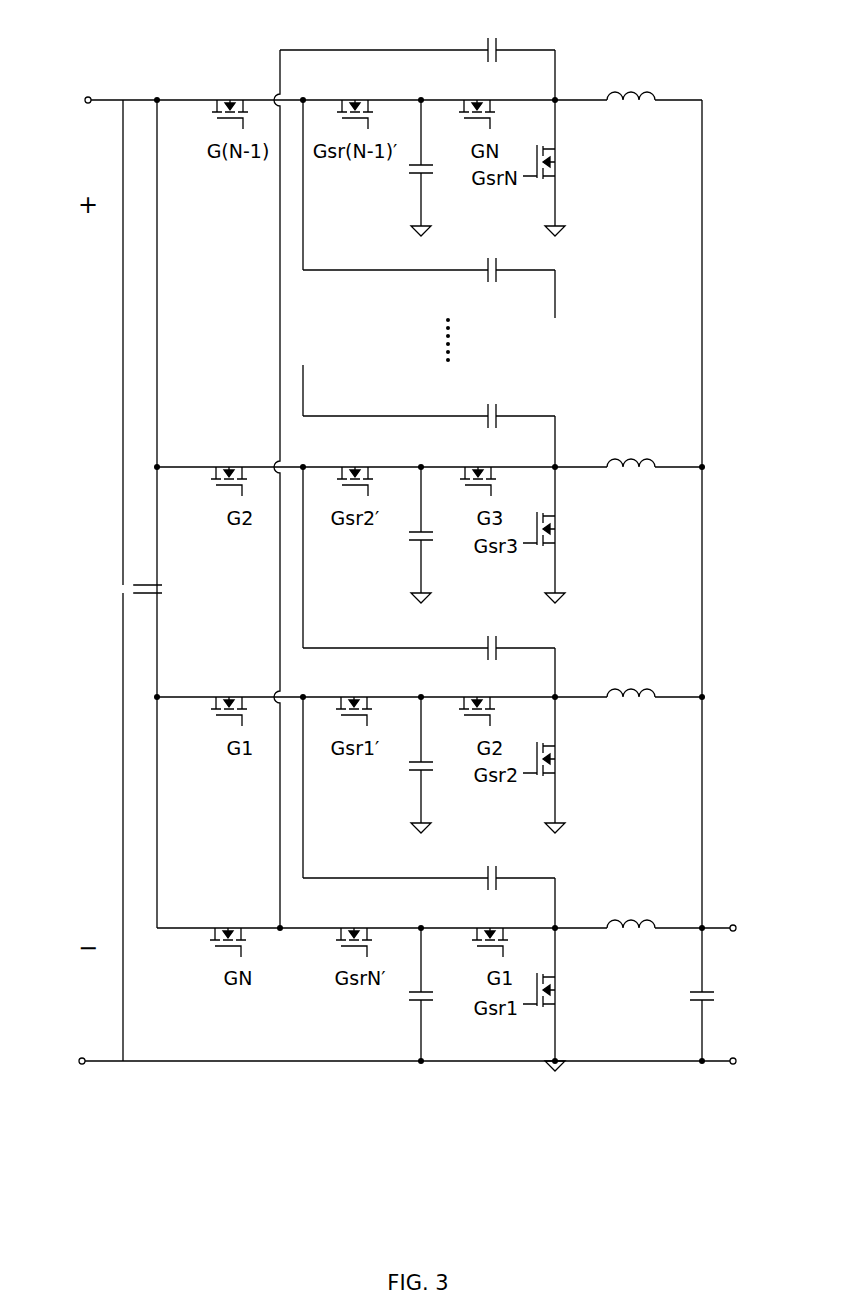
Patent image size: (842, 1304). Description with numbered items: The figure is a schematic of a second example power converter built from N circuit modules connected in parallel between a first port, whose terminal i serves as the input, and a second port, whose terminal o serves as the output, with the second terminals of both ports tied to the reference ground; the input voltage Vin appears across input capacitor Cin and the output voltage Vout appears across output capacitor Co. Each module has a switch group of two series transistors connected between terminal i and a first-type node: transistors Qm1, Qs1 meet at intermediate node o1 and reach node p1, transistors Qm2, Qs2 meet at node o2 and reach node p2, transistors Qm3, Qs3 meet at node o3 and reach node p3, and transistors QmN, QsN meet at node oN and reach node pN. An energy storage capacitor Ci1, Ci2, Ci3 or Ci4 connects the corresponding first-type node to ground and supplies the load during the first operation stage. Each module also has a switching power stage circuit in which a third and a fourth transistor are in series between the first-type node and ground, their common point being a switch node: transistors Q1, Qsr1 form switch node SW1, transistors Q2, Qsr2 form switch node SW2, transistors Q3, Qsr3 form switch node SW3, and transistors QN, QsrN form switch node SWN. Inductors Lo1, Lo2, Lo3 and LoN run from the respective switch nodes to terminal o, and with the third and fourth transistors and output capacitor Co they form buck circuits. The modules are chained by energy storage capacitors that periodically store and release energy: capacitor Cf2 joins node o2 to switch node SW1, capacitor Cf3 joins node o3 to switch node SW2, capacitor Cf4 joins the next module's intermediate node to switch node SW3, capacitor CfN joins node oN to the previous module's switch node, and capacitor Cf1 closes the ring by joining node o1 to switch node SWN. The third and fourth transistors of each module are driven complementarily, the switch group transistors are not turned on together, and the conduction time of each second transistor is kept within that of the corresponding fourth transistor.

The terminal of the input port i is at (88, 88).
The terminal of the output port o is at (733, 982).
The input voltage Vin is at (74, 346).
The input capacitor Cin is at (124, 610).
The first transistor of the switch group in circuit module N QmN is at (222, 101).
The second transistor of the switch group in circuit module N QsN is at (351, 101).
The third transistor of the switching power stage circuit in circuit module N QN is at (477, 101).
The fourth transistor of the switching power stage circuit in circuit module N QsrN is at (567, 162).
The energy storage capacitor Ci4 is at (404, 179).
The energy storage capacitor Cf1 is at (500, 39).
The energy storage capacitor CfN is at (500, 258).
The energy storage capacitor Cf4 is at (500, 404).
The energy storage capacitor Cf3 is at (500, 637).
The energy storage capacitor Cf2 is at (500, 867).
The inductor LoN is at (632, 84).
The inductor Lo3 is at (632, 450).
The inductor Lo2 is at (632, 680).
The inductor Lo1 is at (632, 911).
The intermediate node of the switch group oN is at (298, 87).
The intermediate node of the switch group o3 is at (306, 454).
The intermediate node of the switch group o2 is at (306, 684).
The intermediate node of the switch group o1 is at (285, 940).
The first-type node pN is at (423, 85).
The first-type node p3 is at (423, 452).
The first-type node p2 is at (423, 682).
The first-type node p1 is at (423, 913).
The switch node SWN is at (575, 93).
The switch node SW3 is at (574, 459).
The switch node SW2 is at (574, 689).
The switch node SW1 is at (574, 920).
The first transistor of the switch group in circuit module three Qm3 is at (228, 468).
The second transistor of the switch group in circuit module three Qs3 is at (355, 468).
The third transistor of the switching power stage circuit in circuit module three Q3 is at (478, 468).
The fourth transistor of the switching power stage circuit in circuit module three Qsr3 is at (566, 529).
The energy storage capacitor Ci3 is at (404, 544).
The first transistor of the switch group in circuit module two Qm2 is at (229, 698).
The second transistor of the switch group in circuit module two Qs2 is at (355, 698).
The third transistor of the switching power stage circuit in circuit module two Q2 is at (477, 698).
The fourth transistor of the switching power stage circuit in circuit module two Qsr2 is at (566, 759).
The energy storage capacitor Ci2 is at (404, 774).
The first transistor of the switch group in circuit module one Qm1 is at (229, 929).
The second transistor of the switch group in circuit module one Qs1 is at (355, 929).
The third transistor of the switching power stage circuit in circuit module one Q1 is at (490, 929).
The fourth transistor of the switching power stage circuit in circuit module one Qsr1 is at (566, 990).
The energy storage capacitor Ci1 is at (404, 1003).
The output capacitor Co is at (688, 1004).
The output voltage Vout is at (743, 998).